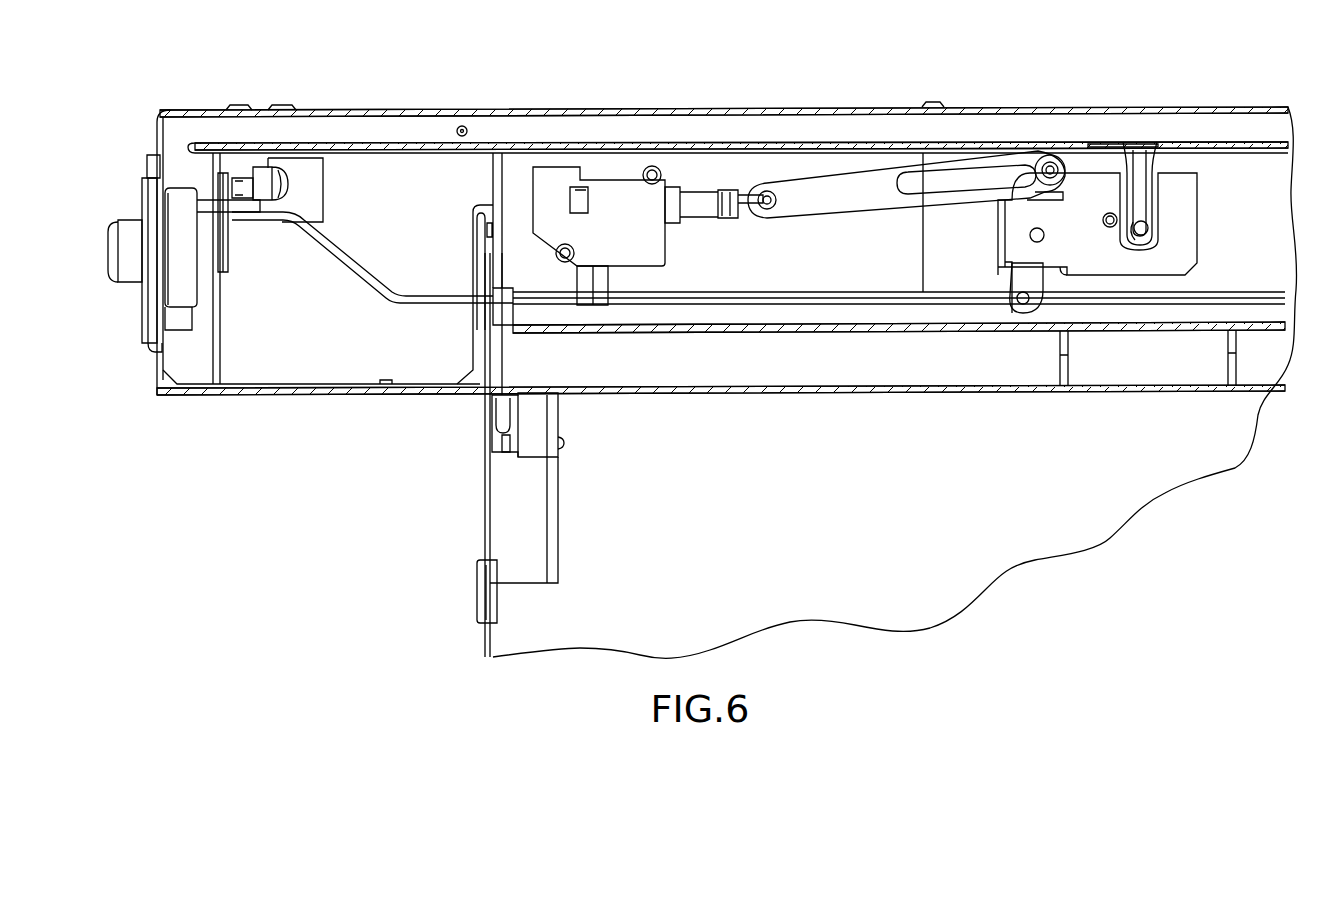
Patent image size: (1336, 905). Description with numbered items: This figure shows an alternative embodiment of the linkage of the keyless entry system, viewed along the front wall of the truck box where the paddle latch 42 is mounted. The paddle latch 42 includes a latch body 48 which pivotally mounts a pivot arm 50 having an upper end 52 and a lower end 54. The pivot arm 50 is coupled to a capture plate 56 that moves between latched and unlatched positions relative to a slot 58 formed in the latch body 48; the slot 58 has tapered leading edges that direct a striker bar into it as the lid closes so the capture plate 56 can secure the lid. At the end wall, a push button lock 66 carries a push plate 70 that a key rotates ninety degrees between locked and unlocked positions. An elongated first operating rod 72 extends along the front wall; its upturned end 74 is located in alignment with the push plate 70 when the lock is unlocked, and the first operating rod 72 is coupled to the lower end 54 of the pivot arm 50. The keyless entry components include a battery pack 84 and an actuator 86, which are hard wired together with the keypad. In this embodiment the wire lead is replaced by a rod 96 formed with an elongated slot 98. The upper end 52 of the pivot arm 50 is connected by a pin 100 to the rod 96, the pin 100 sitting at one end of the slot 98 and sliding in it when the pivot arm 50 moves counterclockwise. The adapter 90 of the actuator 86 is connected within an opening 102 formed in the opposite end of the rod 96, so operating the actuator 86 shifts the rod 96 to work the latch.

The paddle latch 42 is at (1218, 168).
The latch body 48 is at (1110, 255).
The pivot arm 50 is at (1000, 290).
The upper end 52 is at (1060, 156).
The lower end 54 is at (1022, 313).
The capture plate 56 is at (1145, 225).
The slot 58 is at (1143, 170).
The push button lock 66 is at (117, 285).
The push plate 70 is at (228, 242).
The first operating rod 72 is at (753, 299).
The upturned end 74 is at (336, 262).
The battery pack 84 is at (511, 500).
The actuator 86 is at (615, 175).
The adapter 90 is at (768, 212).
The rod 96 is at (857, 200).
The elongated slot 98 is at (940, 190).
The pin 100 is at (1047, 160).
The opening 102 is at (764, 192).